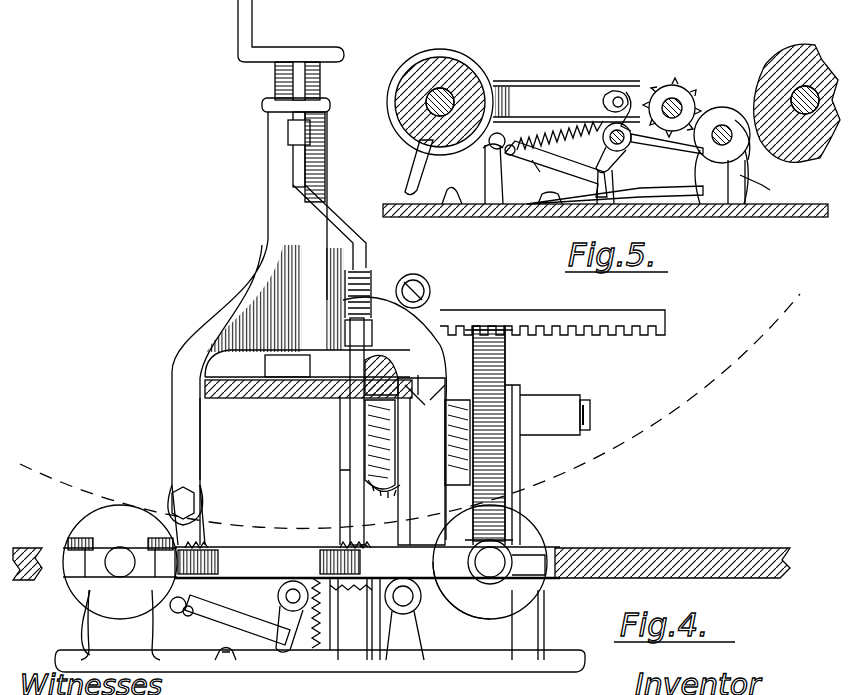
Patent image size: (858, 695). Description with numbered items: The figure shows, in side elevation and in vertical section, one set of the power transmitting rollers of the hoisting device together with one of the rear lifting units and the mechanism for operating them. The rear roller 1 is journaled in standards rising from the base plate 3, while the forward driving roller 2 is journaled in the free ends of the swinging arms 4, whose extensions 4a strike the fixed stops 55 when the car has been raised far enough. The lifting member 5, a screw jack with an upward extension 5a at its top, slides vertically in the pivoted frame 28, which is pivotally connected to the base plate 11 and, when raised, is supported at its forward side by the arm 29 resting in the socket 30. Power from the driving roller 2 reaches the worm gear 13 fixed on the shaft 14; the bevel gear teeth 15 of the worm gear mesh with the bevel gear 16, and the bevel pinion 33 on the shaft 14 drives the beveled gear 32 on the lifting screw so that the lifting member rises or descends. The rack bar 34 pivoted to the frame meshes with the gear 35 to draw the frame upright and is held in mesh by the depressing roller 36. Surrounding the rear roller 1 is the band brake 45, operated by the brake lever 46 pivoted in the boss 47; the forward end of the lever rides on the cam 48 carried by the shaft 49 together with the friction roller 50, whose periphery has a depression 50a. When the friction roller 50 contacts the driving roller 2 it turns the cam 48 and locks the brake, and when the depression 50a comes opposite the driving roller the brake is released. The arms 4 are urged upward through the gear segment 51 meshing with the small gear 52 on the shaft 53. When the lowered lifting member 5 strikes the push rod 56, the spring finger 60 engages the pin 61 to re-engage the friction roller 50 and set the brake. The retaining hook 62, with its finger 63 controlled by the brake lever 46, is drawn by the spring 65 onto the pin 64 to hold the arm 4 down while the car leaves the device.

In FIG. 5, the rear roller 1 is at (403, 100).
In FIG. 4, the rear roller 1 is at (120, 582).
In FIG. 5, the forward roller 2 is at (800, 45).
In FIG. 4, the forward roller 2 is at (490, 582).
In FIG. 4, the base plate 3 is at (557, 650).
In FIG. 5, the swinging arms 4 is at (572, 98).
In FIG. 4, the swinging arms 4 is at (367, 560).
In FIG. 5, the extensions 4a is at (412, 166).
In FIG. 4, the extensions 4a is at (85, 628).
In FIG. 4, the lifting member 5 is at (285, 85).
In FIG. 4, the upward extension 5a is at (243, 12).
In FIG. 5, the base plate 11 is at (802, 218).
In FIG. 4, the base plate 11 is at (566, 530).
In FIG. 4, the worm gear 13 is at (490, 390).
In FIG. 4, the shaft 14 is at (591, 410).
In FIG. 4, the bevel gear teeth 15 is at (448, 470).
In FIG. 4, the bevel gear 16 is at (343, 502).
In FIG. 4, the pivoted frame 28 is at (293, 196).
In FIG. 4, the arm 29 is at (394, 405).
In FIG. 4, the socket 30 is at (421, 460).
In FIG. 4, the beveled gear 32 is at (290, 395).
In FIG. 4, the bevel pinion 33 is at (352, 412).
In FIG. 4, the rack bar 34 is at (558, 325).
In FIG. 4, the gear 35 is at (366, 475).
In FIG. 4, the depressing roller 36 is at (431, 287).
In FIG. 5, the band brake 45 is at (484, 68).
In FIG. 5, the brake lever 46 is at (517, 160).
In FIG. 4, the brake lever 46 is at (252, 630).
In FIG. 5, the boss 47 is at (492, 177).
In FIG. 5, the cam 48 is at (729, 172).
In FIG. 4, the shaft 49 is at (406, 598).
In FIG. 5, the friction roller 50 is at (742, 150).
In FIG. 4, the friction roller 50 is at (430, 595).
In FIG. 5, the depression 50a is at (615, 179).
In FIG. 5, the gear segment 51 is at (660, 84).
In FIG. 4, the gear segment 51 is at (316, 625).
In FIG. 5, the small gear 52 is at (682, 86).
In FIG. 4, the small gear 52 is at (359, 619).
In FIG. 5, the shaft 53 is at (707, 100).
In FIG. 5, the fixed stop 55 is at (438, 200).
In FIG. 4, the push rod 56 is at (295, 165).
In FIG. 5, the spring finger 60 is at (700, 162).
In FIG. 5, the pin 61 is at (748, 178).
In FIG. 5, the retaining hook 62 is at (628, 88).
In FIG. 5, the finger 63 is at (606, 172).
In FIG. 4, the finger 63 is at (280, 620).
In FIG. 5, the pin 64 is at (617, 97).
In FIG. 5, the spring 65 is at (562, 126).